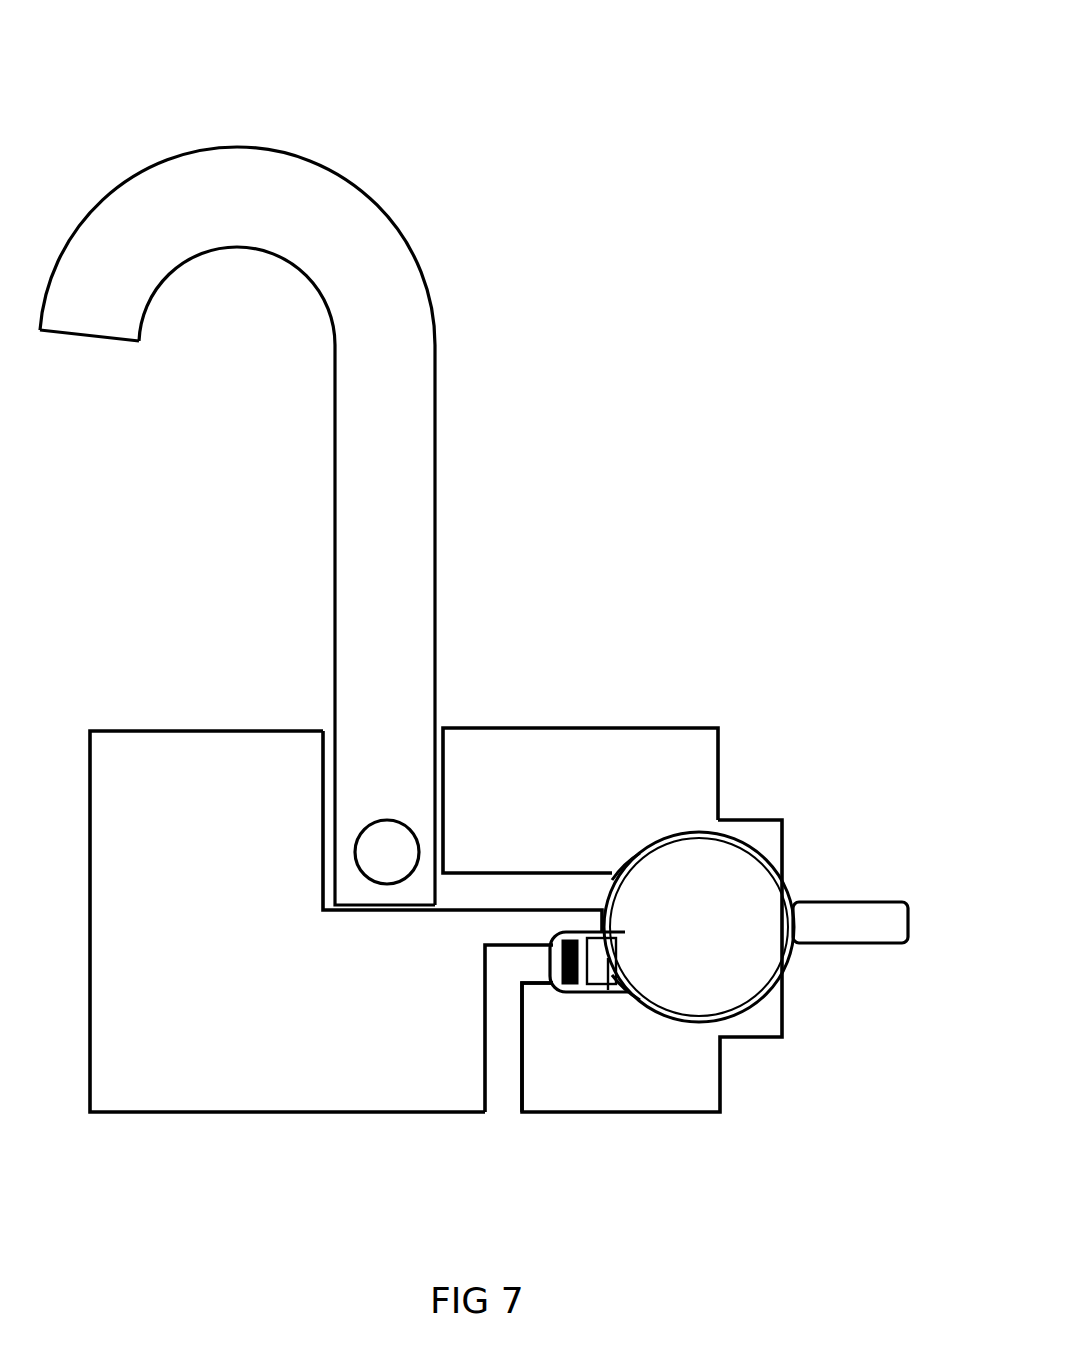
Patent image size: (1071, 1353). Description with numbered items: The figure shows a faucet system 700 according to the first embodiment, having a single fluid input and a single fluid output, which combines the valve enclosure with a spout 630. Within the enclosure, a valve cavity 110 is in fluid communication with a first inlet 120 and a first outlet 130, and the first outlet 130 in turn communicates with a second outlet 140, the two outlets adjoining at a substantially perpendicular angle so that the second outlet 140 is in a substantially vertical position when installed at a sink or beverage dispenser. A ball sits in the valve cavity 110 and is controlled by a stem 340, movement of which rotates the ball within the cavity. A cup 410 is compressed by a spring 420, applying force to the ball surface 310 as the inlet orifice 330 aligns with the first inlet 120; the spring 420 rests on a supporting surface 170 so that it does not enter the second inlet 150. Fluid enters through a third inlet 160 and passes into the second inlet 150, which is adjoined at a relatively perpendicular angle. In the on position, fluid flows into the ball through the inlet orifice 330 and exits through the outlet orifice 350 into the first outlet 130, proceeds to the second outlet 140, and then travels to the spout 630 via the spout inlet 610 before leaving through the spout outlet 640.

The faucet system 700 is at (112, 62).
The valve cavity 110 is at (727, 833).
The first inlet 120 is at (575, 983).
The first outlet 130 is at (546, 902).
The second outlet 140 is at (323, 789).
The second inlet 150 is at (533, 976).
The third inlet 160 is at (524, 1050).
The supporting surface 170 is at (552, 980).
The ball surface 310 is at (726, 920).
The inlet orifice 330 is at (627, 970).
The stem 340 is at (876, 937).
The outlet orifice 350 is at (613, 878).
The cup 410 is at (610, 990).
The spring 420 is at (592, 987).
The spout inlet 610 is at (400, 831).
The spout 630 is at (397, 281).
The spout outlet 640 is at (80, 336).